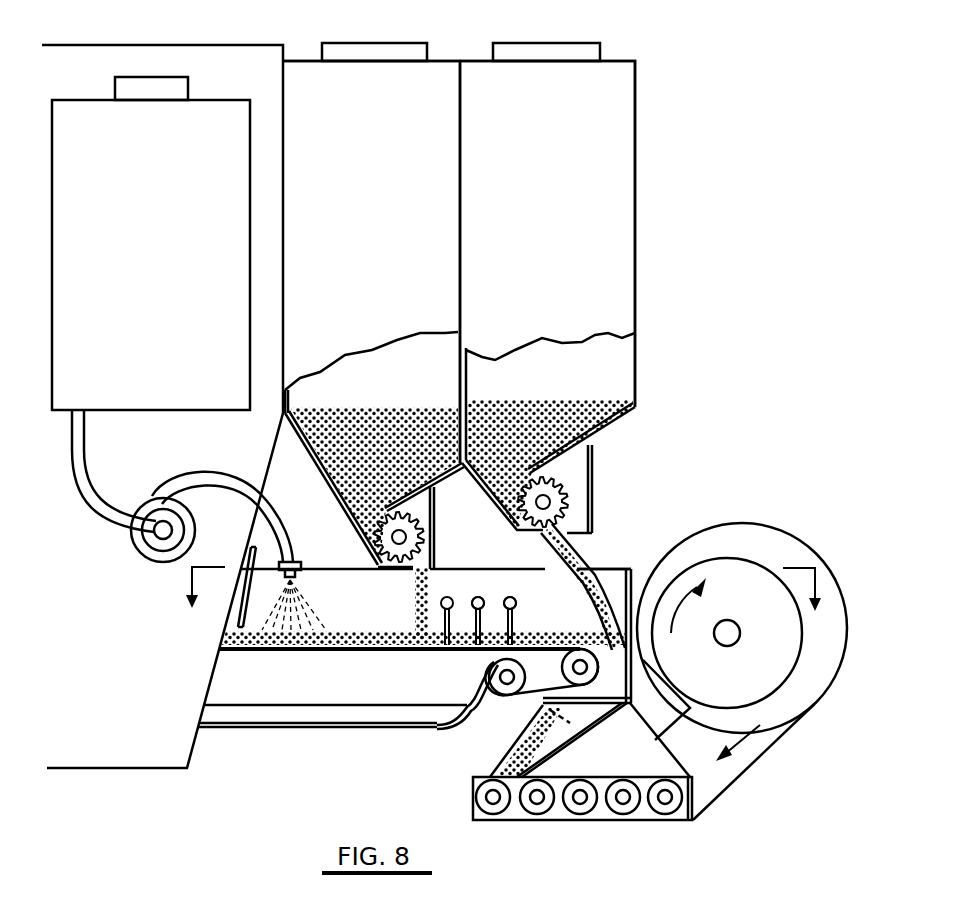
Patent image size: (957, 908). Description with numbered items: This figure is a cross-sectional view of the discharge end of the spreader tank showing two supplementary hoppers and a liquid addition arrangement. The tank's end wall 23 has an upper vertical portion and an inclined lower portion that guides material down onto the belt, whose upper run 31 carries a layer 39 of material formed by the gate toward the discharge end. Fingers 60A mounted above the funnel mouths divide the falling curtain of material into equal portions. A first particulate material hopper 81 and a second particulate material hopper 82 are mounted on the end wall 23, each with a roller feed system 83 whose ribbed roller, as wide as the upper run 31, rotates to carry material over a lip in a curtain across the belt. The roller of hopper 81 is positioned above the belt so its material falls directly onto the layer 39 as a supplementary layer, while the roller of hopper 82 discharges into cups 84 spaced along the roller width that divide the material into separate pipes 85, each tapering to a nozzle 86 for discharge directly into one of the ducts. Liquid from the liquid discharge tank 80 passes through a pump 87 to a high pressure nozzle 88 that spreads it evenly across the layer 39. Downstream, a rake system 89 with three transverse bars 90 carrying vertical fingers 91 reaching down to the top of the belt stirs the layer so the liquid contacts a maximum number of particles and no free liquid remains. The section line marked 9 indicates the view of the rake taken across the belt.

The end wall 23 is at (285, 278).
The upper run 31 is at (370, 652).
The layer 39 is at (393, 630).
The fingers 60A is at (523, 717).
The liquid discharge tank 80 is at (90, 122).
The first particulate material hopper 81 is at (428, 82).
The second particulate material hopper 82 is at (612, 170).
The roller feed system 83 is at (414, 517).
The cups 84 is at (572, 540).
The pipes 85 is at (578, 563).
The nozzle 86 is at (627, 663).
The pump 87 is at (146, 568).
The high pressure nozzle 88 is at (300, 563).
The rake system 89 is at (478, 582).
The transverse bars 90 is at (510, 596).
The vertical fingers 91 is at (514, 623).
The section line 9- 9 is at (504, 602).